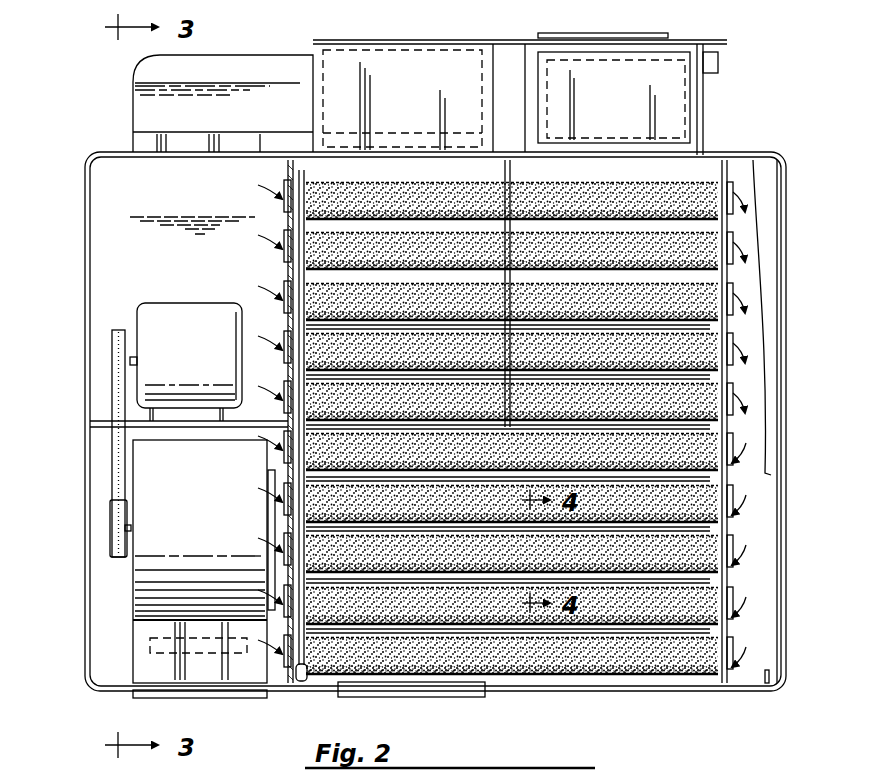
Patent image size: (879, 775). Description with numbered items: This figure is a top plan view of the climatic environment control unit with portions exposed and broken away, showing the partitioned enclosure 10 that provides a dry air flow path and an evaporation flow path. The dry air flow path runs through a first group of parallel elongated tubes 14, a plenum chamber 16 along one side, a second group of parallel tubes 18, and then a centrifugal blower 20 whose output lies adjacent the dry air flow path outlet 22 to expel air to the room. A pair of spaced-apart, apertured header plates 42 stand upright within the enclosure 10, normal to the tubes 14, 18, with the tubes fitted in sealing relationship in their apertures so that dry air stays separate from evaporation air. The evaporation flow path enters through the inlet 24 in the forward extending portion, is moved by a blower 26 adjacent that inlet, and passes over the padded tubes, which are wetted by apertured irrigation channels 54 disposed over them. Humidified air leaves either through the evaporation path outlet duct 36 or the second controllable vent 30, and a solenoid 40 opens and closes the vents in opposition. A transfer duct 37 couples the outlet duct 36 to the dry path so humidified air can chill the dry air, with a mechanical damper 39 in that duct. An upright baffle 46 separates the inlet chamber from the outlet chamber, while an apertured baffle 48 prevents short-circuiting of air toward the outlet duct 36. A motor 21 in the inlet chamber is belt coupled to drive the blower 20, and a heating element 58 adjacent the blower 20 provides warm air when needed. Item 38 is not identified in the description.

The enclosure 10 is at (791, 162).
The first group of parallel-oriented elongated tubes 14 is at (730, 238).
The plenum chamber 16 is at (755, 303).
The second group of parallel-oriented tubes 18 is at (727, 615).
The blower 20 is at (207, 542).
The motor 21 is at (202, 372).
The outlet 22 is at (228, 698).
The inlet 24 is at (668, 37).
The blower 26 is at (690, 103).
The second controllable vent 30 is at (350, 697).
The evaporation path outlet duct 36 is at (312, 42).
The transfer duct 37 is at (254, 120).
The liner 38 is at (678, 127).
The mechanical damper 39 is at (322, 75).
The solenoid 40 is at (718, 63).
The header plates 42 is at (287, 272).
The baffle 46 is at (112, 452).
The apertured baffle 48 is at (503, 173).
The apertured irrigation channels 54 is at (710, 378).
The heating element 58 is at (150, 648).